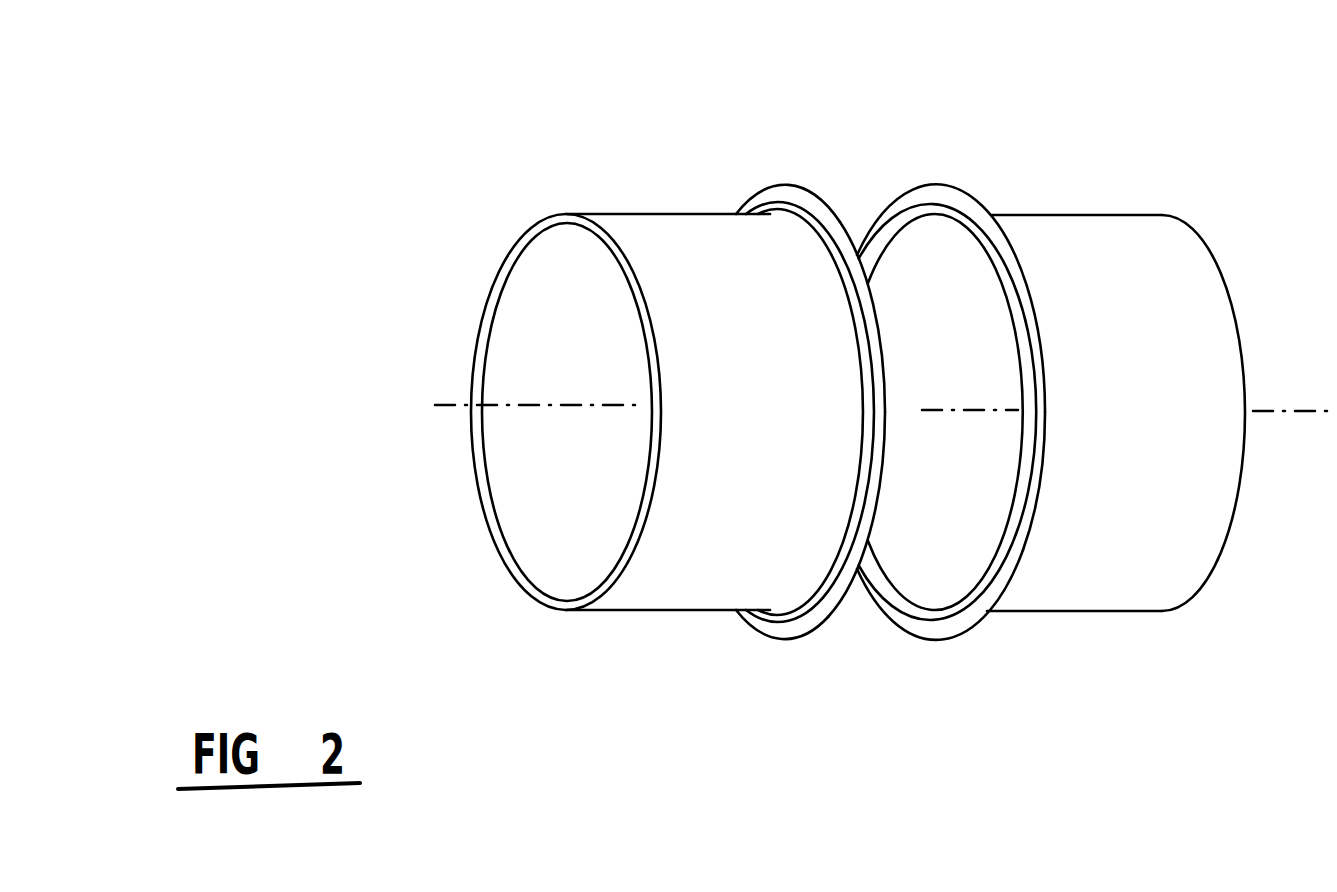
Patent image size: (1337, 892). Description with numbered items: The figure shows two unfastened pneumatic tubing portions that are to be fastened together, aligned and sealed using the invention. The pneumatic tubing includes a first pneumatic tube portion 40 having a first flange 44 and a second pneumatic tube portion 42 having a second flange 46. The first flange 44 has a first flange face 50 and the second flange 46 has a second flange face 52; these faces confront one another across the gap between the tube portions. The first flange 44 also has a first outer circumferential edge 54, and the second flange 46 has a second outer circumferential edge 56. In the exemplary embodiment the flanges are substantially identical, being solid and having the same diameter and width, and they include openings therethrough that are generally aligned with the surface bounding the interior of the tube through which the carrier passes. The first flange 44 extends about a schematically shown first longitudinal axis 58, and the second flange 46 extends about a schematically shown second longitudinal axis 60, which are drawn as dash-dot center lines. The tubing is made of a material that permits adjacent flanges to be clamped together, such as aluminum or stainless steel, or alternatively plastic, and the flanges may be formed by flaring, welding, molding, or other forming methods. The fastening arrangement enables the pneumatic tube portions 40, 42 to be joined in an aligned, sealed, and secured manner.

The first pneumatic tube portion 40 is at (667, 214).
The second pneumatic tube portion 42 is at (1083, 215).
The first flange 44 is at (813, 395).
The second flange 46 is at (996, 395).
The first flange face 50 is at (840, 617).
The second flange face 52 is at (963, 620).
The first outer circumferential edge 54 is at (846, 222).
The second outer circumferential edge 56 is at (1023, 550).
The first longitudinal axis 58 is at (578, 405).
The second longitudinal axis 60 is at (978, 410).